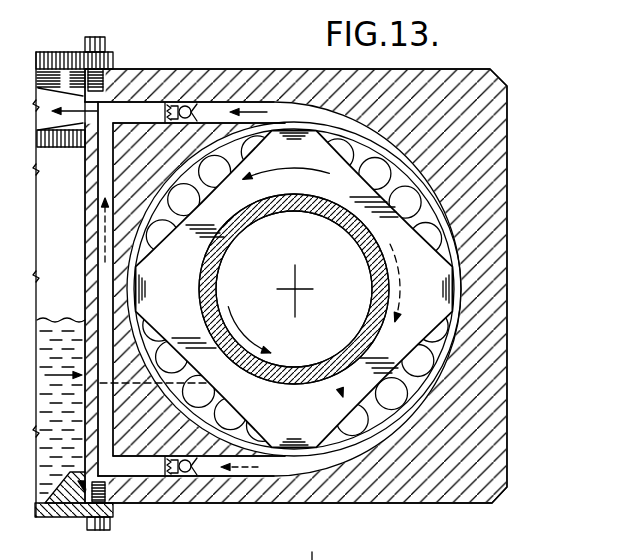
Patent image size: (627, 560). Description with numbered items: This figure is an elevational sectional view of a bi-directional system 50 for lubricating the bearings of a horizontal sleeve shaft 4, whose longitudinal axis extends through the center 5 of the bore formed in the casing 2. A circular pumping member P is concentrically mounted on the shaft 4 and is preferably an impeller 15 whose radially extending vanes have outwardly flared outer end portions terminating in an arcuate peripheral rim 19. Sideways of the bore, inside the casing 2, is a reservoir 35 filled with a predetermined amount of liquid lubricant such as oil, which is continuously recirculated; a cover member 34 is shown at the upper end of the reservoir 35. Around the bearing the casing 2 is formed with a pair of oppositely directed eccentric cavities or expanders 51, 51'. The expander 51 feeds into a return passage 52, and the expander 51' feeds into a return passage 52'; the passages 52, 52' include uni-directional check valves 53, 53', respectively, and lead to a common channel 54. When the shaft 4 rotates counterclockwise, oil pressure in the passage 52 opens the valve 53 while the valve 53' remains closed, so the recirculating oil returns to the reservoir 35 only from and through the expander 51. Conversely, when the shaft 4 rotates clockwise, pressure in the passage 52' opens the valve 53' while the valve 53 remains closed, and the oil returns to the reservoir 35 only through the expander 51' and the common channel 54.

The casing 2 is at (268, 503).
The sleeve shaft 4 is at (373, 302).
The center of bore 5 is at (296, 288).
The impeller 15 is at (298, 411).
The arcuate peripheral rim 19 is at (0, 214).
The cover plate 34 is at (37, 54).
The reservoir 35 is at (70, 262).
The bi-directional system 50 is at (282, 69).
The expander 51 is at (296, 165).
The expander 51' is at (296, 412).
The return passage 52 is at (185, 81).
The return passage 52' is at (191, 495).
The check valve 53 is at (180, 83).
The check valve 53' is at (179, 495).
The common channel 54 is at (105, 292).
The pumping member P is at (343, 396).